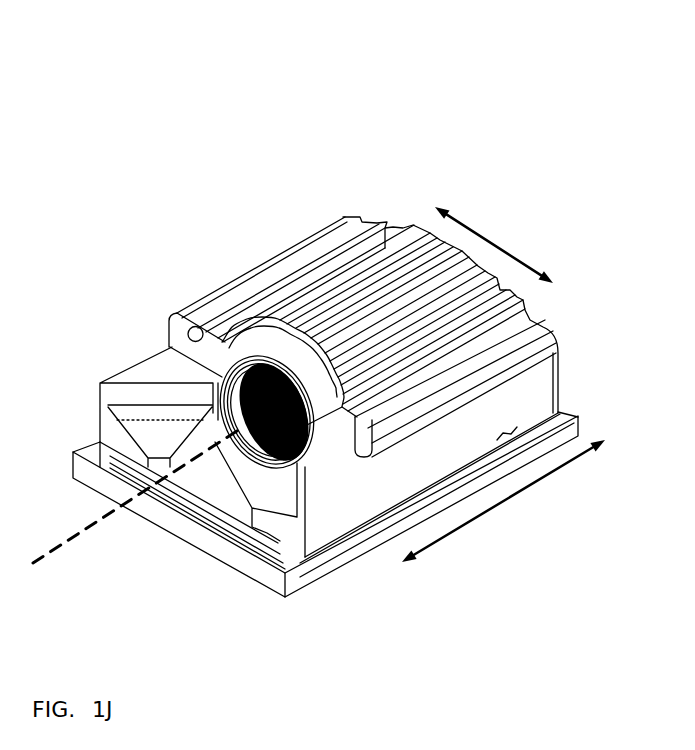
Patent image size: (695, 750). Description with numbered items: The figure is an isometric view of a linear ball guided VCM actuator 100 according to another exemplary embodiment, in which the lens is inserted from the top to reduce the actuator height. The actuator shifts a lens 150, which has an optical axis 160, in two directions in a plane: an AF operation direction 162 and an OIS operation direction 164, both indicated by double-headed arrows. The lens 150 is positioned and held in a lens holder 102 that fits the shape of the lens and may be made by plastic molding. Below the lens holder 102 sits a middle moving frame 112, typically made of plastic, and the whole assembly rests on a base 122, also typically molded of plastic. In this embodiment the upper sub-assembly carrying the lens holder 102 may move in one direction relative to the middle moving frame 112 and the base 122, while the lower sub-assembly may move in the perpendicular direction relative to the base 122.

The linear ball guided VCM actuator 100 is at (345, 49).
The lens holder 102 is at (533, 322).
The middle moving frame 112 is at (537, 377).
The base 122 is at (295, 574).
The lens 150 is at (317, 303).
The optical axis 160 is at (100, 520).
The AF operation direction 162 is at (524, 508).
The OIS operation direction 164 is at (546, 200).